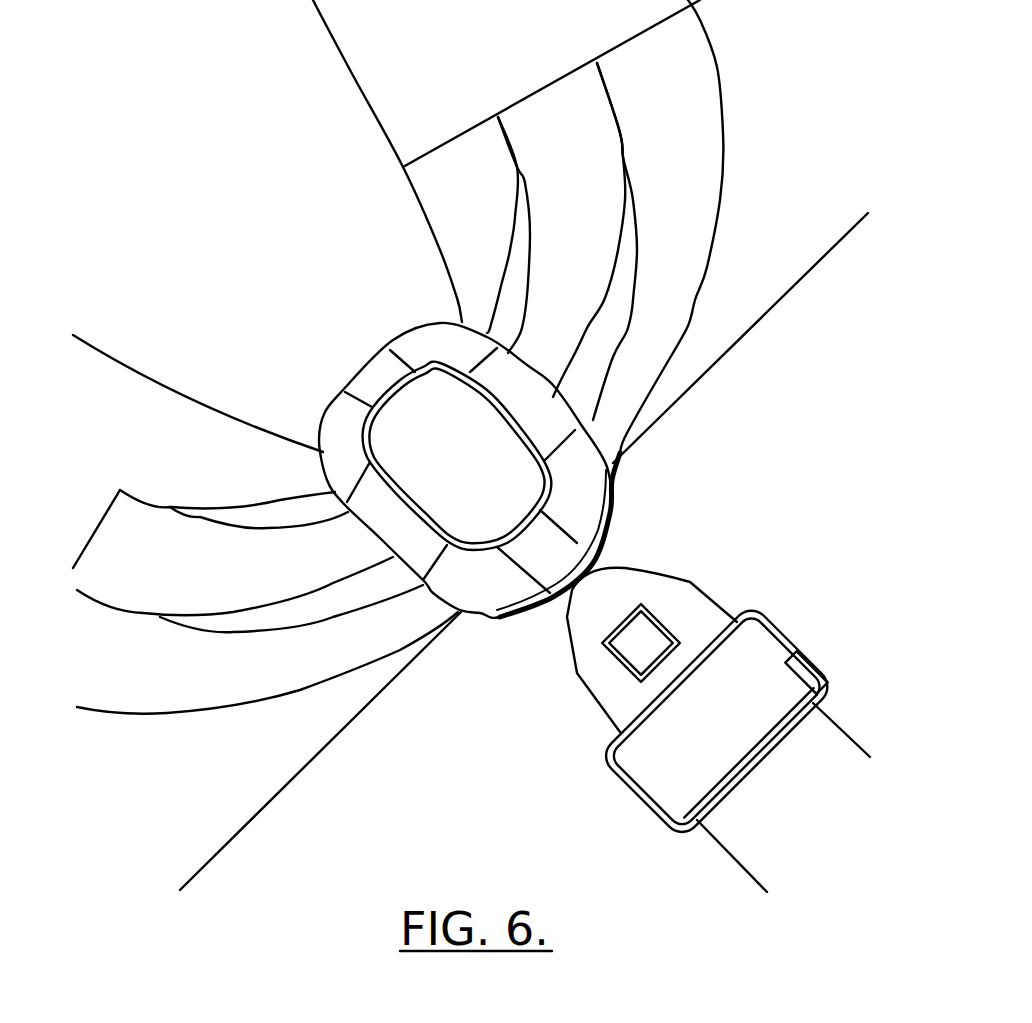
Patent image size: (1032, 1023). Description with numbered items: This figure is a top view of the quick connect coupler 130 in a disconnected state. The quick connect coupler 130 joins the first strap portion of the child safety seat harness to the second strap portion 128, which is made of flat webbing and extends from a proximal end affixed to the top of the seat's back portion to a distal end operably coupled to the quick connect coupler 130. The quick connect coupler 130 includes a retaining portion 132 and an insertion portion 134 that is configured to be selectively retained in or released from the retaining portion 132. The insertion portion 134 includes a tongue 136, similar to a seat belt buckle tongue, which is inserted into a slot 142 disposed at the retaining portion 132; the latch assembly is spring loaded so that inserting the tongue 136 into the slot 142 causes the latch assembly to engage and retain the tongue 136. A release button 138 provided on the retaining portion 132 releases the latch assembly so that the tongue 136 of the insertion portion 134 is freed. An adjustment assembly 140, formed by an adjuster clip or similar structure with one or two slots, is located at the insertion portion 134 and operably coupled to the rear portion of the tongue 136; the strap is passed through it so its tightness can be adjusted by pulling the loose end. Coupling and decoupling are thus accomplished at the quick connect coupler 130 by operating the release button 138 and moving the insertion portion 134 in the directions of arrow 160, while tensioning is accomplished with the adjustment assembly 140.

The second strap portion 128 is at (398, 445).
The quick connect coupler 130 is at (672, 446).
The retaining portion 132 is at (438, 432).
The insertion portion 134 is at (784, 617).
The tongue 136 is at (627, 737).
The release button 138 is at (457, 532).
The adjustment assembly 140 is at (710, 742).
The slot 142 is at (626, 532).
The arrow 160 is at (676, 520).